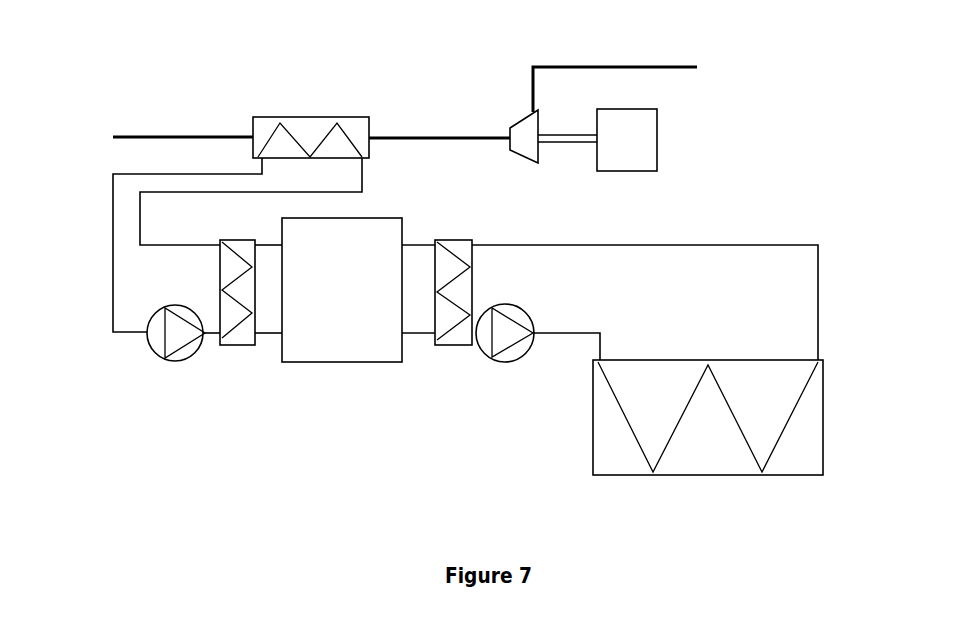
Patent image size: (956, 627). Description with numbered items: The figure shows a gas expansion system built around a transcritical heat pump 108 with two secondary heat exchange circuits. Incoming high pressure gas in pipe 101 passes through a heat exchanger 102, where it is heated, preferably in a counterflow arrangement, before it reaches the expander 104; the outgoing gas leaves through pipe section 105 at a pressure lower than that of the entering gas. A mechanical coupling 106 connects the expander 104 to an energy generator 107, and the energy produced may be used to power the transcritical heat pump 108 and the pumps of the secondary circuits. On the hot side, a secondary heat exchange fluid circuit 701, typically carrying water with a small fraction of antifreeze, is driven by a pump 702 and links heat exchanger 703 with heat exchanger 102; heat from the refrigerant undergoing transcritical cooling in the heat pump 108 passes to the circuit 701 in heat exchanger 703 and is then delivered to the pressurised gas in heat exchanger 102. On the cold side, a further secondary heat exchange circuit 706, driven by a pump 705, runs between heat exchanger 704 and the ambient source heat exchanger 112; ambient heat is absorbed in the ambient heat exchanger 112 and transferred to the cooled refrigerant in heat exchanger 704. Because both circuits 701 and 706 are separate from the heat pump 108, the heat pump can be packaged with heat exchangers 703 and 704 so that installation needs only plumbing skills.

The pipe 101 is at (171, 136).
The heat exchanger 102 is at (300, 116).
The expander 104 is at (520, 155).
The pipe section 105 is at (632, 66).
The mechanical coupling 106 is at (563, 144).
The energy generator 107 is at (663, 157).
The transcritical heat pump 108 is at (342, 367).
The ambient source heat exchanger 112 is at (823, 453).
The secondary heat exchange fluid circuit 701 is at (133, 230).
The pump 702 is at (182, 368).
The heat exchanger 703 is at (231, 357).
The heat exchanger 704 is at (453, 346).
The pump 705 is at (502, 367).
The secondary heat exchange circuit 706 is at (588, 328).